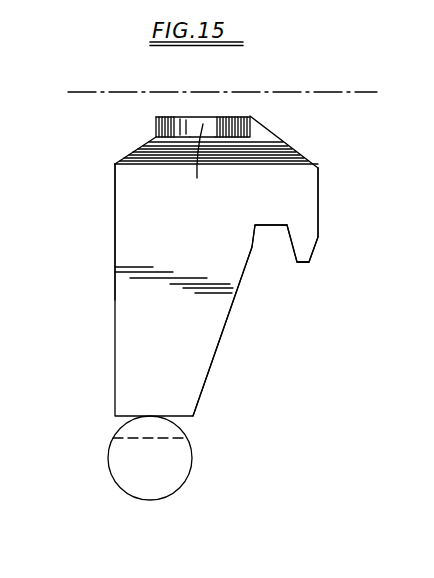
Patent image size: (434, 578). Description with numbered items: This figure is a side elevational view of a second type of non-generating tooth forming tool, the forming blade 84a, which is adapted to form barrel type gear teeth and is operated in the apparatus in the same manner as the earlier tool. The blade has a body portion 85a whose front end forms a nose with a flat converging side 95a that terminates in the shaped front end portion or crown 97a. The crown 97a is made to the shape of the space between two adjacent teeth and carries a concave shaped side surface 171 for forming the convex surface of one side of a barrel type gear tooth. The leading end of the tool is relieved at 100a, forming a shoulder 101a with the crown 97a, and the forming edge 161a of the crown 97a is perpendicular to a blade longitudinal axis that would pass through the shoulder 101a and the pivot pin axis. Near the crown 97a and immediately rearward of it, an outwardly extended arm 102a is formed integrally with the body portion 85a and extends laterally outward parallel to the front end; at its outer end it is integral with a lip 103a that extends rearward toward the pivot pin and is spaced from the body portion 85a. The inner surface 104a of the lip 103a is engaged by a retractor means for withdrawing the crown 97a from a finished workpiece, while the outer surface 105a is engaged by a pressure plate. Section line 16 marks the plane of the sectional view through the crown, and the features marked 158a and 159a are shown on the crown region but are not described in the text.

The section line 16- 16 is at (100, 52).
The forming blade 84a is at (113, 282).
The body portion 85a is at (137, 222).
The flat converging side 95a is at (183, 150).
The shaped front end portion 97a is at (217, 117).
The relieved leading end 100a is at (133, 146).
The shoulder 101a is at (156, 137).
The outwardly extended arm 102a is at (273, 200).
The lip 103a is at (303, 243).
The inner surface of lip 104a is at (295, 253).
The outer surface of lip 105a is at (317, 238).
The cap top 158a is at (156, 116).
The inclined surface 159a is at (251, 117).
The forming edge 161a is at (238, 113).
The concave shaped side surface 171 is at (220, 160).